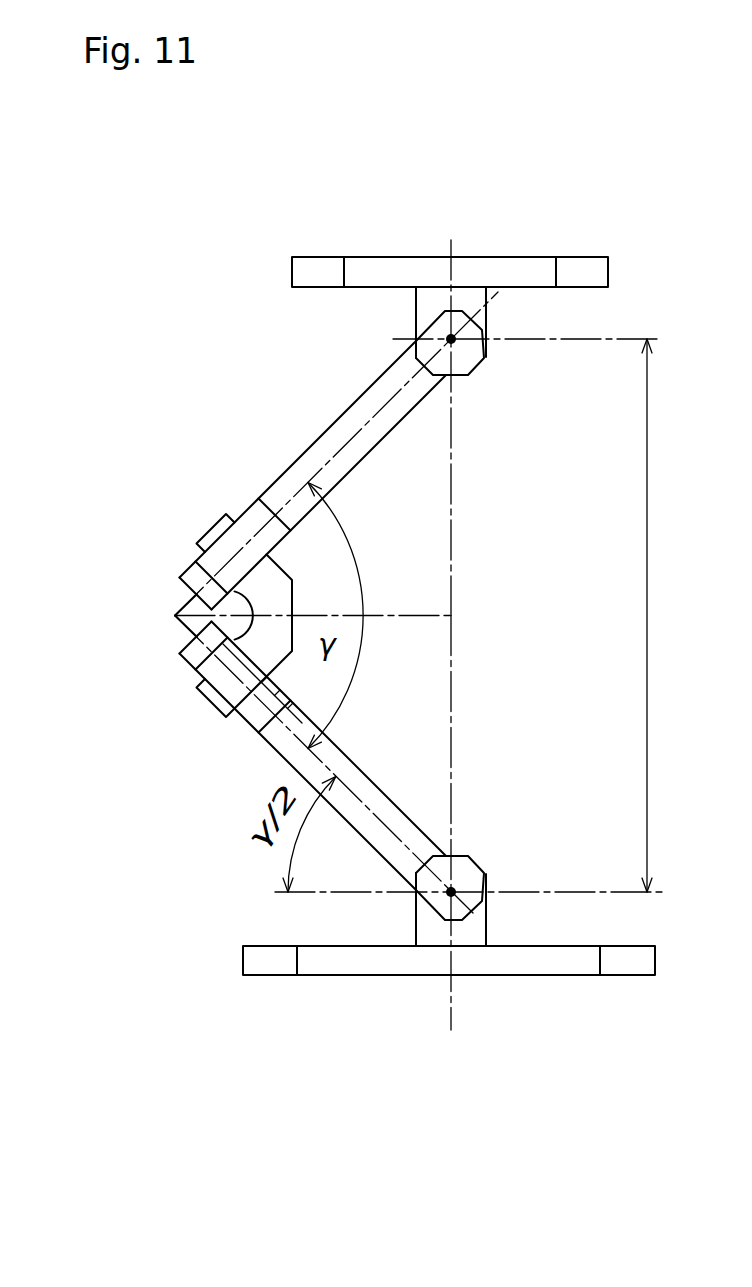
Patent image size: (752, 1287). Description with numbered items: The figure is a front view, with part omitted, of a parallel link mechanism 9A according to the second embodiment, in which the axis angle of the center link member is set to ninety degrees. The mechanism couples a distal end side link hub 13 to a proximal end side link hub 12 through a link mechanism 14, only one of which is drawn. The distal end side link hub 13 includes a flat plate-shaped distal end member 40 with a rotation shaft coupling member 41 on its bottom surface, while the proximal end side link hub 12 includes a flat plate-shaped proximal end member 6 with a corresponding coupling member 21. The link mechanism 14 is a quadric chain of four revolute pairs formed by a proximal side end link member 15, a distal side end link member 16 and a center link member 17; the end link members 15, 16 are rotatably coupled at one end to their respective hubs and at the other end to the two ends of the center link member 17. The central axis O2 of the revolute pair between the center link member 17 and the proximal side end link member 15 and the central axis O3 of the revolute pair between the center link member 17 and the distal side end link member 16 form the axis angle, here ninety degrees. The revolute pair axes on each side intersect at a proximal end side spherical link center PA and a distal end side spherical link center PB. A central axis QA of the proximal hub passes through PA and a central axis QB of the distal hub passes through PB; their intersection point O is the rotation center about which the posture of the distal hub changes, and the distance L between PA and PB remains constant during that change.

The parallel link mechanism 9A is at (192, 247).
The distal end side link hub 13 is at (430, 143).
The distal end member 40 is at (317, 273).
The rotation shaft coupling member 41 is at (432, 303).
The proximal end side link hub 12 is at (418, 1077).
The proximal end member 6 is at (343, 963).
The lower bracket 21 is at (432, 931).
The link mechanism 14 is at (212, 468).
The distal side end link member 16 is at (328, 430).
The proximal side end link member 15 is at (370, 780).
The center link member 17 is at (220, 688).
The central axis of revolute pair section of center link member and distal side end O3 is at (185, 600).
The central axis of revolute pair section of center link member and proximal side en O2 is at (183, 627).
The distal end side spherical link center PB is at (456, 337).
The proximal end side spherical link center PA is at (456, 888).
The central axis of distal end side link hub QB is at (452, 461).
The central axis of proximal end side link hub QA is at (452, 697).
The point of intersection O is at (452, 615).
The distance between spherical link centers L is at (468, 615).